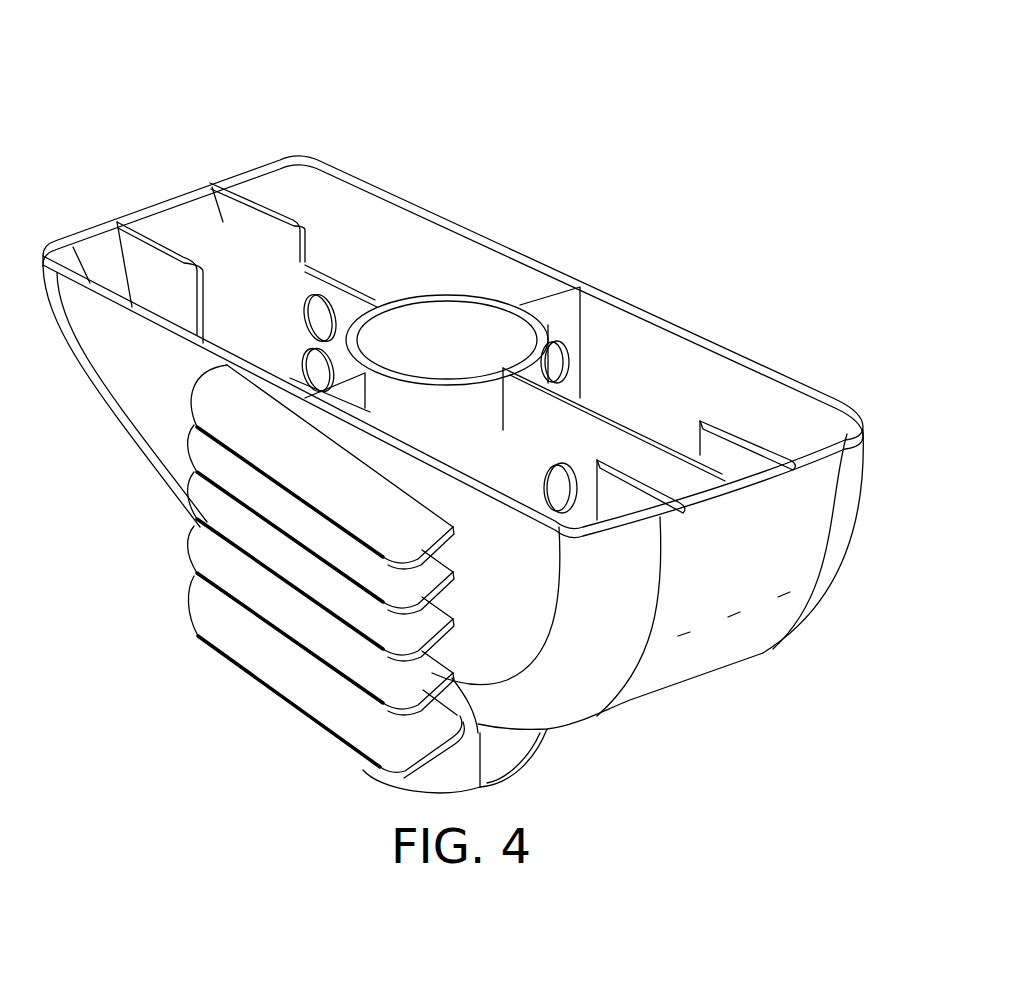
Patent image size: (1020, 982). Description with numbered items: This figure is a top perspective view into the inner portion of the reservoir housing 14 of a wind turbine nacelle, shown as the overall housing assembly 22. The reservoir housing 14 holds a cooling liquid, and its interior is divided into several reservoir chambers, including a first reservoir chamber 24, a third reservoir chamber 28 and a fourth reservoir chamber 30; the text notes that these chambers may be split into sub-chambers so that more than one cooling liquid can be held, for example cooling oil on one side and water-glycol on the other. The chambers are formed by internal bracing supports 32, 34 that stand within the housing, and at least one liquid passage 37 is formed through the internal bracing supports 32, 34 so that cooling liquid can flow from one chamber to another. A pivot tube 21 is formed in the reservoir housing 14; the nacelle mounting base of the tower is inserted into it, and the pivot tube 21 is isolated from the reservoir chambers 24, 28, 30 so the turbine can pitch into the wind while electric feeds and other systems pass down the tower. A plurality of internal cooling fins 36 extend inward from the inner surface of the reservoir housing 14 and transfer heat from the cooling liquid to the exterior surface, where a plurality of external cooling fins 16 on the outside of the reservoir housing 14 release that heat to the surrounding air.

The reservoir housing 14 is at (580, 663).
The external cooling fins 16 is at (243, 647).
The pivot tube 21 is at (447, 313).
The tray assembly 22 is at (742, 727).
The first reservoir chamber 24 is at (457, 400).
The third reservoir chamber 28 is at (193, 235).
The fourth reservoir chamber 30 is at (320, 198).
The internal bracing support 32 is at (268, 284).
The internal bracing support 34 is at (563, 312).
The internal cooling fins 36 is at (246, 220).
The liquid passage 37 is at (577, 370).